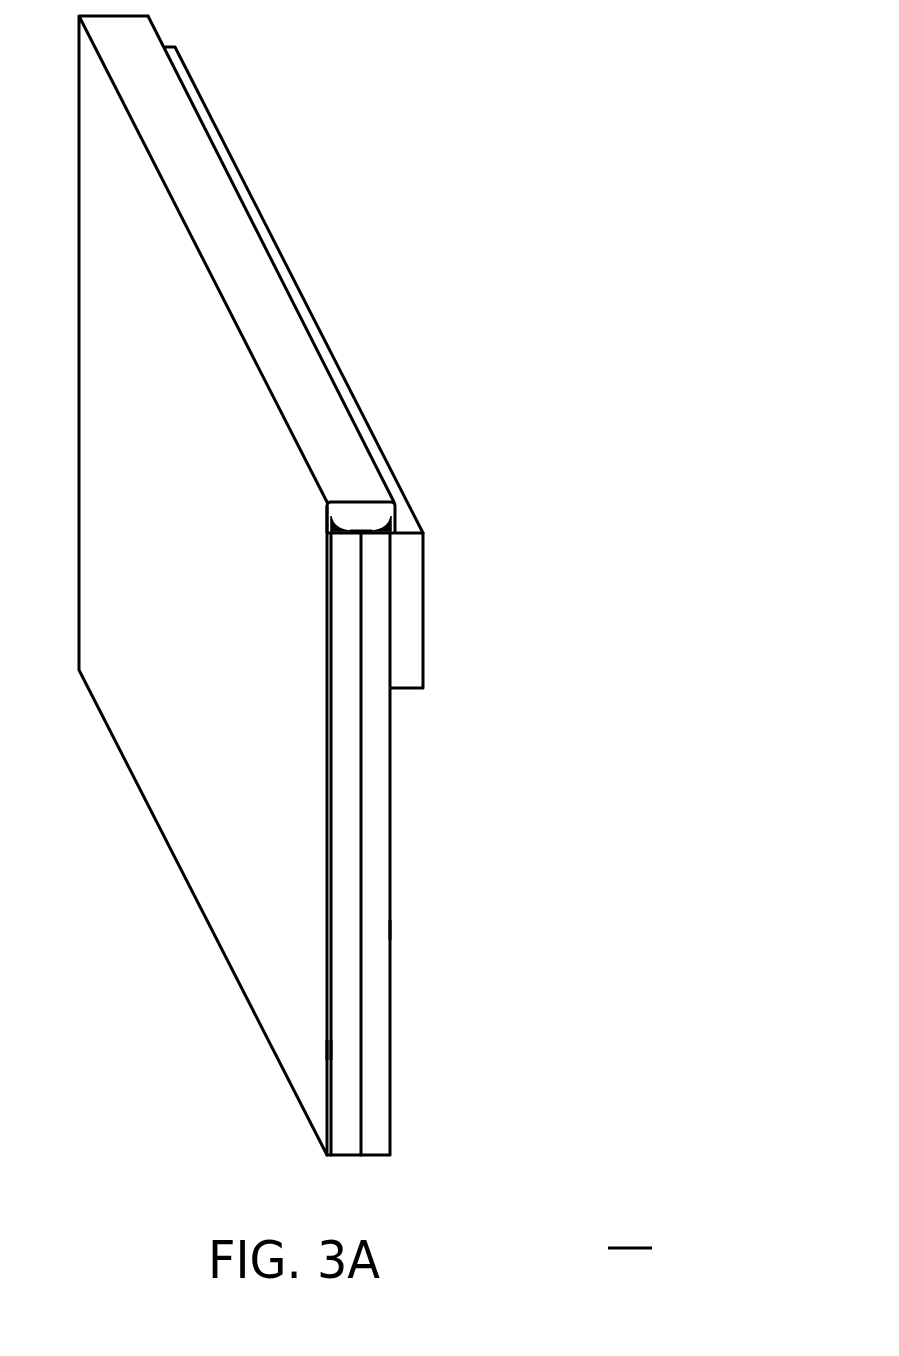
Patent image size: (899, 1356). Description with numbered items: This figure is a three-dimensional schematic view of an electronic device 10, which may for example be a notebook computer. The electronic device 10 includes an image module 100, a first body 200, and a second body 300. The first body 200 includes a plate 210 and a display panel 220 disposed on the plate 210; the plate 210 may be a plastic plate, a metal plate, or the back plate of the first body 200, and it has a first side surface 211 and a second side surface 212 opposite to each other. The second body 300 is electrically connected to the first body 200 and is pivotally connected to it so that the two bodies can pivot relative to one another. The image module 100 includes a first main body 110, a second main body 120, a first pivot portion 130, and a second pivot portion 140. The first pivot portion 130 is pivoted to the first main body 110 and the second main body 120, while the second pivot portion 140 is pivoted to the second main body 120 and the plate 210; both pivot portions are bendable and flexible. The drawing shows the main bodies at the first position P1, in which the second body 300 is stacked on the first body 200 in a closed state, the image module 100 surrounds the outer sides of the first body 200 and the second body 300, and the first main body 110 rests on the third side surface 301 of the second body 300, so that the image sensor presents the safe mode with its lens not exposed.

The electronic device 10 is at (265, 625).
The image module 100 is at (320, 352).
The first main body 110 is at (405, 620).
The second main body 120 is at (362, 515).
The first pivot portion 130 is at (393, 527).
The second pivot portion 140 is at (325, 526).
The first body 200 is at (195, 585).
The plate 210 is at (328, 893).
The first side surface 211 is at (331, 1050).
The second side surface 212 is at (327, 1050).
The display panel 220 is at (342, 1007).
The second body 300 is at (372, 815).
The third side surface 301 is at (390, 930).
The first position P1 is at (630, 1228).